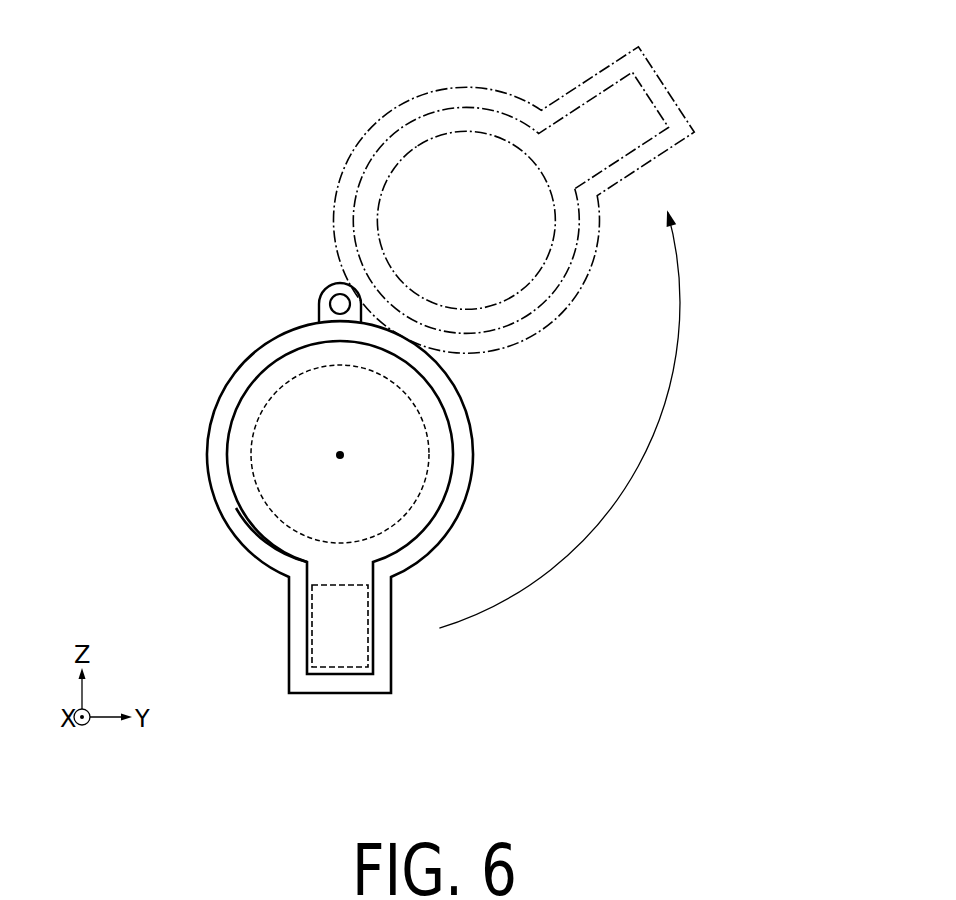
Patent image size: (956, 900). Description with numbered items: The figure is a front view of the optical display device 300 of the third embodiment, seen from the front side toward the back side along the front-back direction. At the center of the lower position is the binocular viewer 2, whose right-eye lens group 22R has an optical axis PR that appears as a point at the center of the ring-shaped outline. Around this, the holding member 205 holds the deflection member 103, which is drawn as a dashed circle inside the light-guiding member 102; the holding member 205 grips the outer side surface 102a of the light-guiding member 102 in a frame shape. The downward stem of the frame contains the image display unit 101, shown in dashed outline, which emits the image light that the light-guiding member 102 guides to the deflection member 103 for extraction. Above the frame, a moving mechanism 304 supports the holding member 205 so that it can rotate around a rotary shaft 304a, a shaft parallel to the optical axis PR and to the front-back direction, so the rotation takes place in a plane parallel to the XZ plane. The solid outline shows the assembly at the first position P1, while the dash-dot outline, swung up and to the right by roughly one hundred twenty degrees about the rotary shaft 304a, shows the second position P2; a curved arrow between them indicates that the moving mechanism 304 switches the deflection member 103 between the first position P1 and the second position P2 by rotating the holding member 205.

The binocular viewer 2 is at (310, 387).
The image display unit 101 is at (330, 673).
The light-guiding member 102 is at (410, 543).
The outer side surface 102a is at (260, 537).
The deflection member 103 is at (427, 427).
The holding member 205 is at (218, 480).
The optical display device 300 is at (327, 102).
The moving mechanism 304 is at (327, 277).
The rotary shaft 304a is at (337, 307).
The first position P1 is at (310, 387).
The second position P2 is at (547, 202).
The optical axis PR is at (206, 429).
The right-eye lens group 22R is at (340, 455).